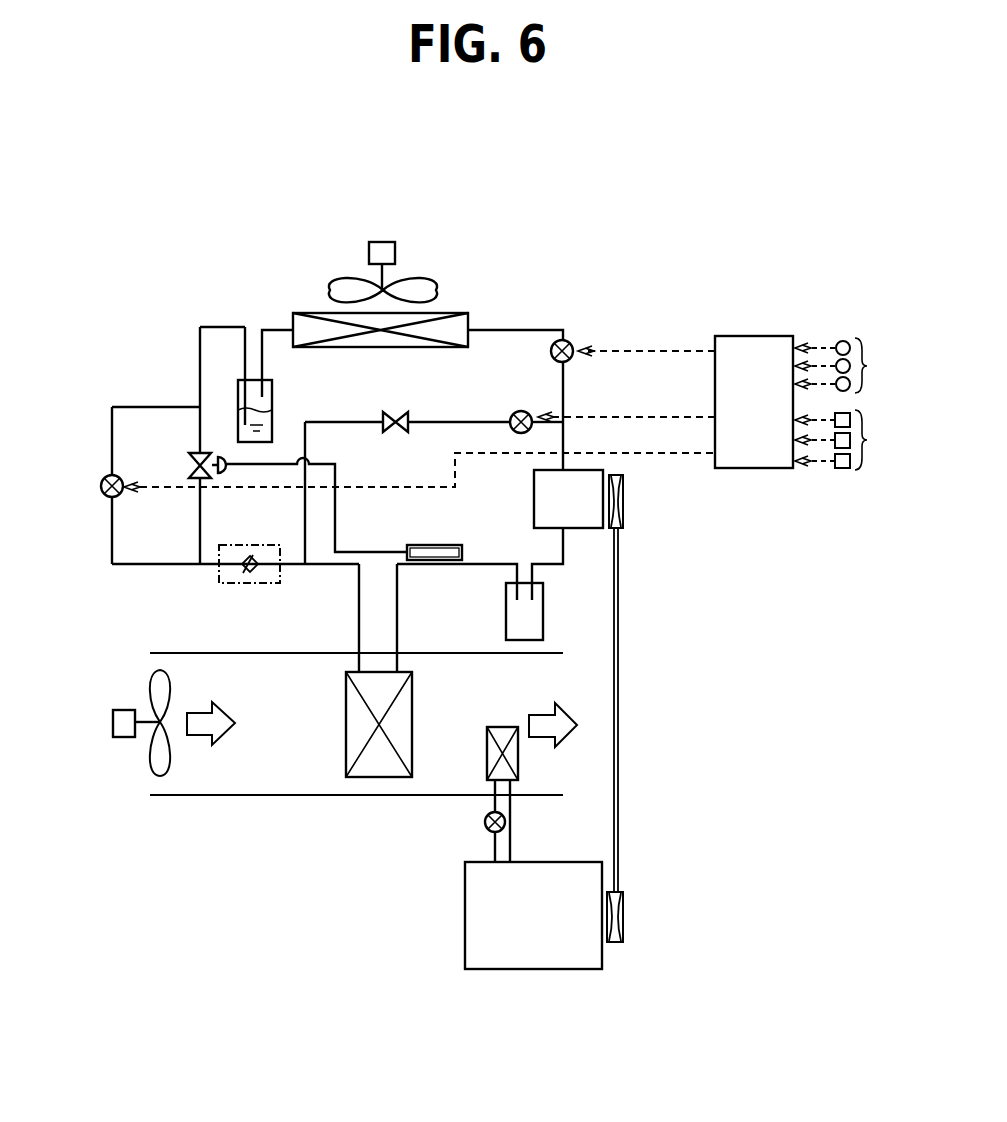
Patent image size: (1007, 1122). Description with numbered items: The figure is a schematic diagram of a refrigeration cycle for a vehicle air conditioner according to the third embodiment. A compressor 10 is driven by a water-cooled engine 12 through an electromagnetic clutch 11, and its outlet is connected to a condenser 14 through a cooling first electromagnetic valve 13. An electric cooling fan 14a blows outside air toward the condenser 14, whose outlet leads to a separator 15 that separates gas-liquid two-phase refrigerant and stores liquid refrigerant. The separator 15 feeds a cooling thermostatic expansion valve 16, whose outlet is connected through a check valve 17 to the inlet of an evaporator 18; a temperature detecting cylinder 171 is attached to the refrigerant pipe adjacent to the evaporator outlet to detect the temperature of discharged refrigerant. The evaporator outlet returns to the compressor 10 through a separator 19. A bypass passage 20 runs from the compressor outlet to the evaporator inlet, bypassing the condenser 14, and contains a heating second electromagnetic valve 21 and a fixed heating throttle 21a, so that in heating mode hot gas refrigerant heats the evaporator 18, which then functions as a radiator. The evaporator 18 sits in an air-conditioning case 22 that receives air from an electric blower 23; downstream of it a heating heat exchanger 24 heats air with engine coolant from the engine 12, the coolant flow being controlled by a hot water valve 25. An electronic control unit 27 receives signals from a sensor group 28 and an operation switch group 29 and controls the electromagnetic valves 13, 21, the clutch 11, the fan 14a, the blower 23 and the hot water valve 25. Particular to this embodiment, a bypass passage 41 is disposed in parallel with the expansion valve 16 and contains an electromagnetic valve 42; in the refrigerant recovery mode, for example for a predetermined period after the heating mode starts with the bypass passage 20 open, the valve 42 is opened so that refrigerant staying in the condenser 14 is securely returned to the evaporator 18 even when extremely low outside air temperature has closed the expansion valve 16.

The compressor 10 is at (533, 505).
The electromagnetic clutch 11 is at (625, 500).
The engine 12 is at (465, 915).
The first electromagnetic valve 13 is at (570, 340).
The condenser 14 is at (312, 313).
The cooling fan 14a is at (340, 280).
The separator 15 is at (272, 402).
The expansion valve 16 is at (190, 468).
The check valve 17 is at (250, 585).
The temperature detecting cylinder 171 is at (438, 545).
The evaporator 18 is at (378, 778).
The separator 19 is at (543, 612).
The bypass passage 20 is at (303, 512).
The second electromagnetic valve 21 is at (510, 415).
The throttle 21a is at (395, 433).
The air-conditioning case 22 is at (272, 796).
The blower 23 is at (165, 765).
The heating heat exchanger 24 is at (503, 727).
The hot water valve 25 is at (485, 822).
The electronic control unit 27 is at (752, 336).
The sensor group 28 is at (851, 365).
The operation switch group 29 is at (851, 440).
The bypass passage 41 is at (112, 442).
The electromagnetic valve 42 is at (104, 496).